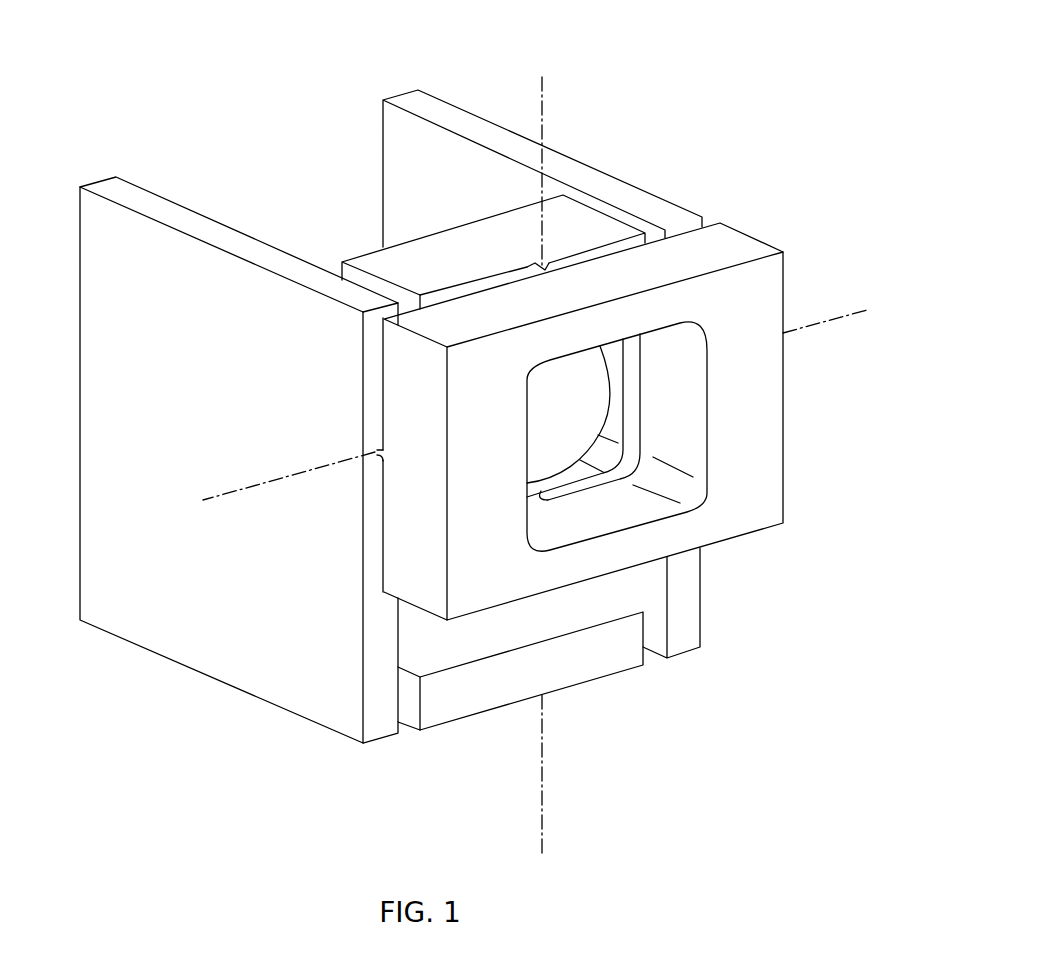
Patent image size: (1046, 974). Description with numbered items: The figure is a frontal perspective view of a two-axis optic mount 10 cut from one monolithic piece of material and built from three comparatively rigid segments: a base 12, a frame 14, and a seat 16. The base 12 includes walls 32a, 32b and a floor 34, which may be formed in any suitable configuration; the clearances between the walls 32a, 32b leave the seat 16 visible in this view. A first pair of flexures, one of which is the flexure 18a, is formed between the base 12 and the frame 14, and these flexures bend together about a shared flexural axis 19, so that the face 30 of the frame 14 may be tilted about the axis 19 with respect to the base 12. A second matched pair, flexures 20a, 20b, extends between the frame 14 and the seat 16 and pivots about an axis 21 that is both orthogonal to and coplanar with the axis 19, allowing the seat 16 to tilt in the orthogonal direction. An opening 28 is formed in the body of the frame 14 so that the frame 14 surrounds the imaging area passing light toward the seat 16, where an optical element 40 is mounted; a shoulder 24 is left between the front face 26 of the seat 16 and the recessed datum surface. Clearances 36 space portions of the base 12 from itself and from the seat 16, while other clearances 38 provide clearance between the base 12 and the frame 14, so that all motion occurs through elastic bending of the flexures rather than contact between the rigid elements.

The mount 10 is at (194, 92).
The base 12 is at (483, 112).
The frame 14 is at (796, 398).
The seat 16 is at (350, 240).
The flexure 18a is at (370, 440).
The flexural axis 19 is at (820, 318).
The flexure 20a is at (545, 268).
The flexure 20b is at (562, 510).
The axis of pivot 21 is at (547, 114).
The shoulder 24 is at (612, 425).
The front face 26 is at (477, 290).
The opening 28 is at (707, 450).
The face 30 is at (757, 508).
The wall 32a is at (152, 441).
The wall 32b is at (424, 195).
The floor 34 is at (500, 636).
The clearance 36 is at (660, 684).
The clearance 38 is at (362, 340).
The optical element 40 is at (540, 418).